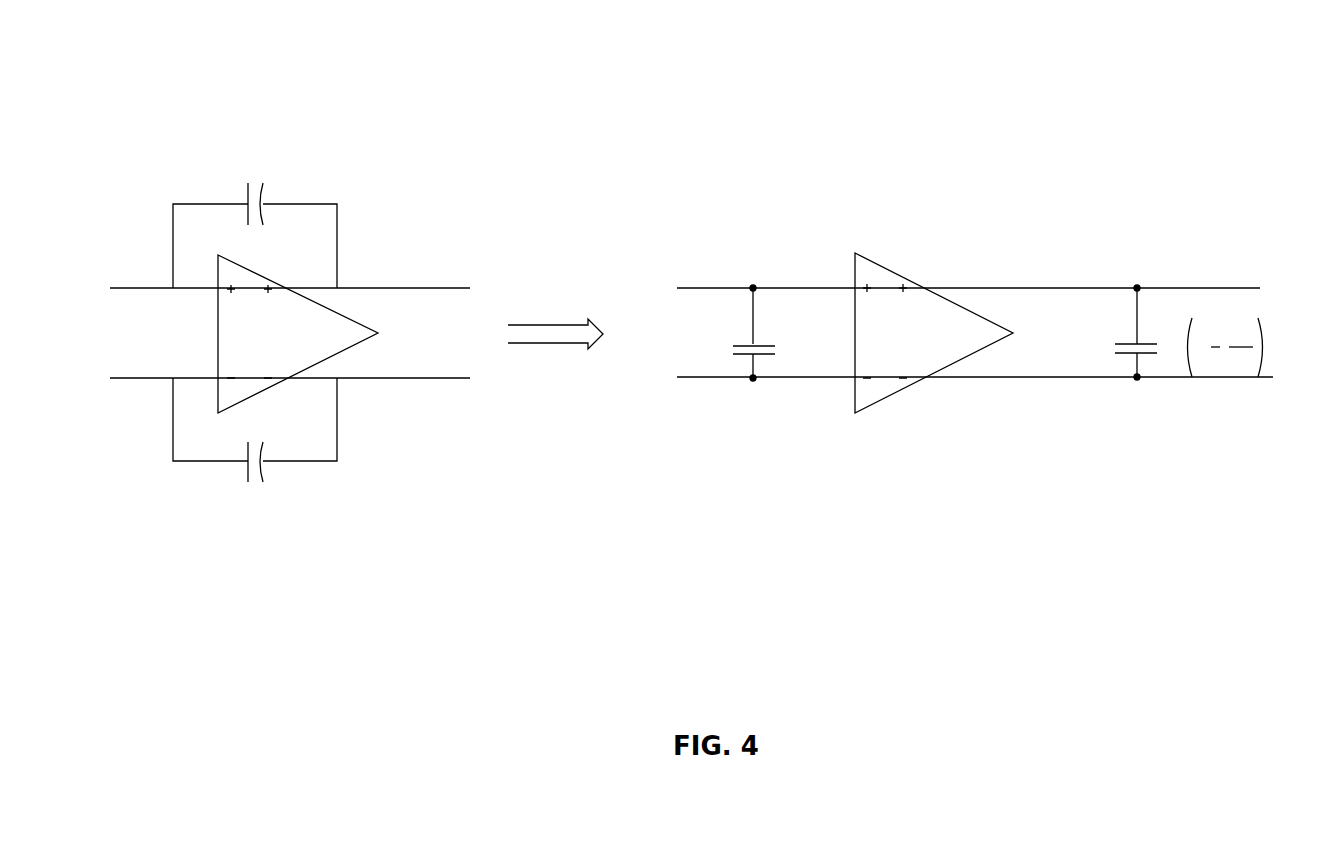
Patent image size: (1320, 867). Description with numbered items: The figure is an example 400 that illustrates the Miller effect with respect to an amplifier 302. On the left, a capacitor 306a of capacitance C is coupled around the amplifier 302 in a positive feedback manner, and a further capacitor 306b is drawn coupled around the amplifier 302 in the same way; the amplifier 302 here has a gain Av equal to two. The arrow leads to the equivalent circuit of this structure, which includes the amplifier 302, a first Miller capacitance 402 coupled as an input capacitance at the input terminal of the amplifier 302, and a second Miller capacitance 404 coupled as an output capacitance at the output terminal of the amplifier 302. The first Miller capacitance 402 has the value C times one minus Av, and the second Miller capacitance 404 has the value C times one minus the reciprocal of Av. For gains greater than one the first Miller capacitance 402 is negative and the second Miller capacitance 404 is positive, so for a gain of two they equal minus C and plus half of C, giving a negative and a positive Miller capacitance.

The example 400 is at (1263, 53).
The amplifier 302 is at (218, 338).
The capacitor 306a is at (253, 180).
The feedback capacitor 306b is at (256, 487).
The first Miller capacitance 402 is at (767, 361).
The second Miller capacitance 404 is at (1148, 365).